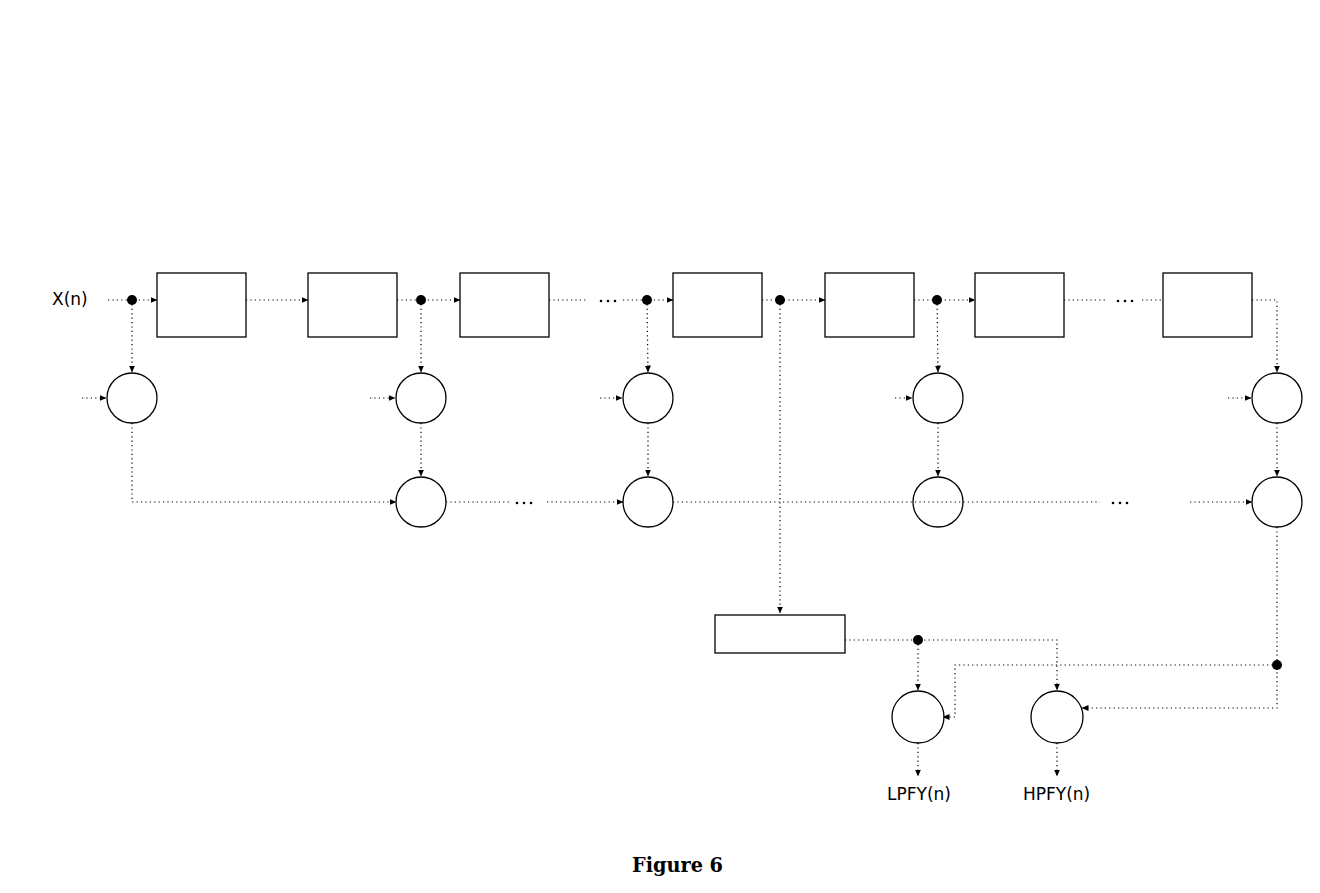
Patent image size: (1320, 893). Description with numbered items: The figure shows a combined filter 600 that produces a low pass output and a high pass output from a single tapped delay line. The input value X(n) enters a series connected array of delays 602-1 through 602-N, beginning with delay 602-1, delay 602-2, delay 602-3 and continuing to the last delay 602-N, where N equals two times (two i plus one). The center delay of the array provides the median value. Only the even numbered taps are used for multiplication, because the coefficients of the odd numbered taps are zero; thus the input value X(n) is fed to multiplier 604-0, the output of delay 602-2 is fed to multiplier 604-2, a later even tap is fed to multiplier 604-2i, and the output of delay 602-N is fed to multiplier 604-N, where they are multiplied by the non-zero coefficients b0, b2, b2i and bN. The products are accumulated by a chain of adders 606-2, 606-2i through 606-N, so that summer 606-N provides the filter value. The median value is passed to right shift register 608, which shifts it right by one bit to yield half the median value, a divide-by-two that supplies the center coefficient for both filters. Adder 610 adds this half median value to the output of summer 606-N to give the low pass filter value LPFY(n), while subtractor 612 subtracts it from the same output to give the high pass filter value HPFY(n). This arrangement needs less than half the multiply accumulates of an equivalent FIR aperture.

The combined filter 600 is at (152, 125).
The delay 602-1 is at (208, 262).
The delay 602-2 is at (350, 270).
The delay 602-3 is at (495, 270).
The delay 602-N is at (1198, 268).
The multiplier 604-0 is at (122, 423).
The multiplier 604-2 is at (408, 418).
The multiplier 604-2i is at (628, 417).
The multiplier 604-N is at (1262, 415).
The adder 606-2 is at (403, 515).
The adder 606-2i is at (609, 517).
The adder 606-N is at (1257, 510).
The right shift register 608 is at (758, 650).
The adder 610 is at (895, 703).
The subtractor 612 is at (1037, 730).